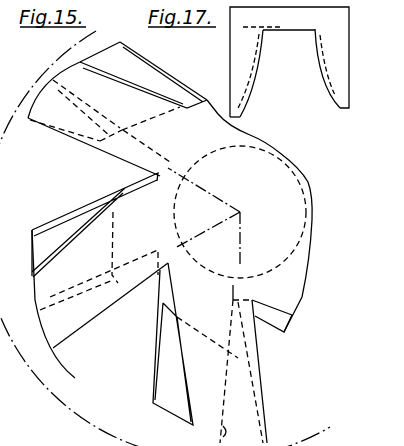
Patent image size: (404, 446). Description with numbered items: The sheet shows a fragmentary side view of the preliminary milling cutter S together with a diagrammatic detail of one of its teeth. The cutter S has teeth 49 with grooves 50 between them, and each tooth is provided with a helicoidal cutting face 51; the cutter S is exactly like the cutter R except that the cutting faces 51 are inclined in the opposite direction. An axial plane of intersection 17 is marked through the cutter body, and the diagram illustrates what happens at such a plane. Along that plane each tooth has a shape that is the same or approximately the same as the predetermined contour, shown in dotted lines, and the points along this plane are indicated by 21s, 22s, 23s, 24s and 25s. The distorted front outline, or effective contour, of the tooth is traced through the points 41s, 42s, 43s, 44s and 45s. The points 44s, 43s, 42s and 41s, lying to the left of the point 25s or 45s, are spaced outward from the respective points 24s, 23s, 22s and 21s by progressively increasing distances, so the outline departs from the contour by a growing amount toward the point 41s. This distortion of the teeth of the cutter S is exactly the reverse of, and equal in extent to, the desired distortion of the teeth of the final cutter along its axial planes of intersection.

In FIG. 15, the axial plane of intersection 17 is at (233, 288).
In FIG. 15, the teeth 49 is at (48, 227).
In FIG. 15, the grooves 50 is at (103, 355).
In FIG. 15, the helicoidal cutting faces 51 is at (75, 327).
In FIG. 15, the preliminary milling cutter S is at (184, 134).
In FIG. 17, the point of the tooth shape along the axial plane 21s is at (341, 103).
In FIG. 17, the point of the tooth shape along the axial plane 22s is at (312, 33).
In FIG. 17, the point of the tooth shape along the axial plane 23s is at (283, 27).
In FIG. 17, the point of the tooth shape along the axial plane 24s is at (244, 23).
In FIG. 17, the point of the tooth shape along the axial plane 25s is at (241, 116).
In FIG. 15, the point of the distorted front outline 41s is at (223, 432).
In FIG. 17, the point of the distorted front outline 41s is at (340, 110).
In FIG. 15, the point of the distorted front outline 42s is at (238, 357).
In FIG. 17, the point of the distorted front outline 42s is at (313, 31).
In FIG. 15, the point of the distorted front outline 43s is at (240, 357).
In FIG. 17, the point of the distorted front outline 43s is at (288, 32).
In FIG. 15, the point of the distorted front outline 44s is at (248, 360).
In FIG. 17, the point of the distorted front outline 44s is at (265, 40).
In FIG. 15, the point of the distorted front outline 45s is at (268, 440).
In FIG. 17, the point of the distorted front outline 45s is at (240, 117).